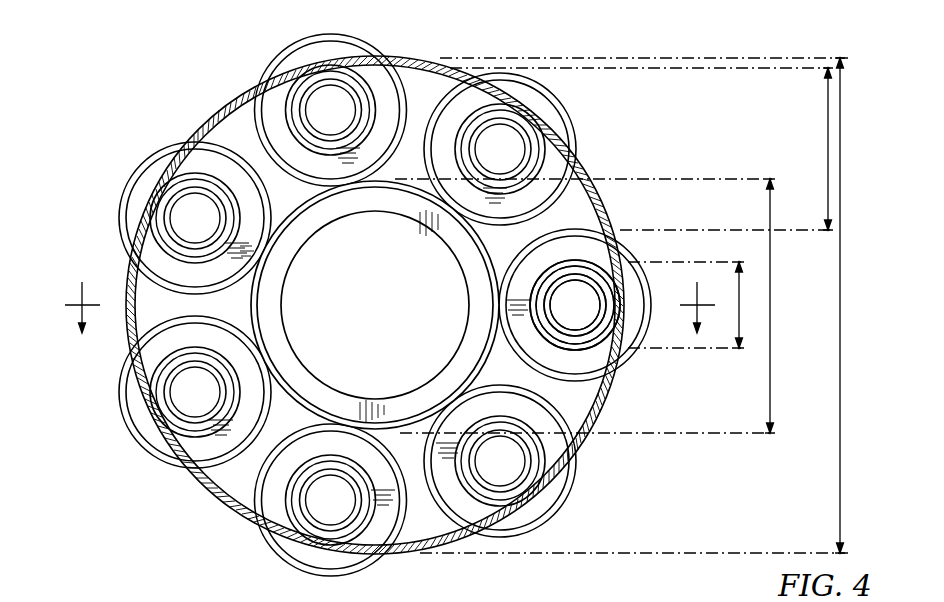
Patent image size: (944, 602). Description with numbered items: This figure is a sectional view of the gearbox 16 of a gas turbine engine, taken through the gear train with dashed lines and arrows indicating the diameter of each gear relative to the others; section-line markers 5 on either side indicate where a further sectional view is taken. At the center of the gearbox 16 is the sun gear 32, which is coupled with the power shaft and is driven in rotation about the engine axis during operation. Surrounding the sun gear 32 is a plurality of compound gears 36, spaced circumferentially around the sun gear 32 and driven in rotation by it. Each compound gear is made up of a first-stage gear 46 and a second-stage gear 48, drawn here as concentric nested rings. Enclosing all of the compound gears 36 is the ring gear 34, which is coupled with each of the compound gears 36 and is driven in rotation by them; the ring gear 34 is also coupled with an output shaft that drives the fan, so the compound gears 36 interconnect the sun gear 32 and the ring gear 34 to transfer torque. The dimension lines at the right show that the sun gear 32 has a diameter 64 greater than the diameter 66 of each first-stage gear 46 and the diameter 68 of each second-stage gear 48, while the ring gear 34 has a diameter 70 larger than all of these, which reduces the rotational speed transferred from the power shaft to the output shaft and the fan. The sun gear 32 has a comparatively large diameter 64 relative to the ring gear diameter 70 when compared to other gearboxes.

The gearbox 16 is at (108, 78).
The sun gear 32 is at (267, 296).
The ring gear 34 is at (129, 344).
The compound gears 36 is at (153, 140).
The first-stage gears 46 is at (576, 114).
The second-stage gears 48 is at (543, 324).
The section line 5 is at (390, 294).
The diameter of the sun gear 64 is at (771, 327).
The diameter of the first-stage gears 66 is at (826, 148).
The diameter of the second-stage gears 68 is at (741, 305).
The diameter of the ring gear 70 is at (838, 267).